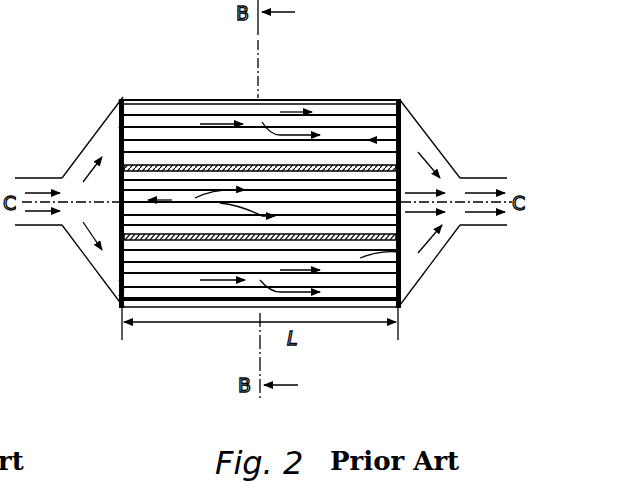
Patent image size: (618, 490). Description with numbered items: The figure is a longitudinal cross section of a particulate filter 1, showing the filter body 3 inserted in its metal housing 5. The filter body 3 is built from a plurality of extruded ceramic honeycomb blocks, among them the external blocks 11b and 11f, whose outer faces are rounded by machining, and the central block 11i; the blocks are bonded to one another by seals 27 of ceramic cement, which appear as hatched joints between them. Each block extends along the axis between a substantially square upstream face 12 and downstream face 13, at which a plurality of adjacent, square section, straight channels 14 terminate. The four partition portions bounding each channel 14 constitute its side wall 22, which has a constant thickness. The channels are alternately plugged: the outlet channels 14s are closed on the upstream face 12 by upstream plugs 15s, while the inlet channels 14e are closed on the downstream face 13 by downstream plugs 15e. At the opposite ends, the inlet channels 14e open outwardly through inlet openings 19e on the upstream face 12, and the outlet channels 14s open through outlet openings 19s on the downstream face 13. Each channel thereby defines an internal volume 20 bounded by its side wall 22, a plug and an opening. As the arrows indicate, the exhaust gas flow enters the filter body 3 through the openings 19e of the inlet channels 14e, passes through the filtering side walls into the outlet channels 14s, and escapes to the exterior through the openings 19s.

The particulate filter 1 is at (150, 306).
The filter body 3 is at (400, 131).
The metal housing 5 is at (122, 100).
The block 11b is at (340, 130).
The block 11i is at (335, 200).
The block 11f is at (378, 283).
The upstream face 12 is at (122, 283).
The downstream face 13 is at (400, 286).
The channel 14 is at (155, 105).
The inlet channel 14e is at (128, 301).
The outlet channel 14s is at (400, 252).
The downstream plug 15e is at (400, 124).
The upstream plug 15s is at (119, 101).
The inlet opening 19e is at (119, 128).
The outlet opening 19s is at (400, 101).
The internal volume 20 is at (182, 123).
The side wall 22 is at (208, 125).
The seal 27 is at (327, 125).